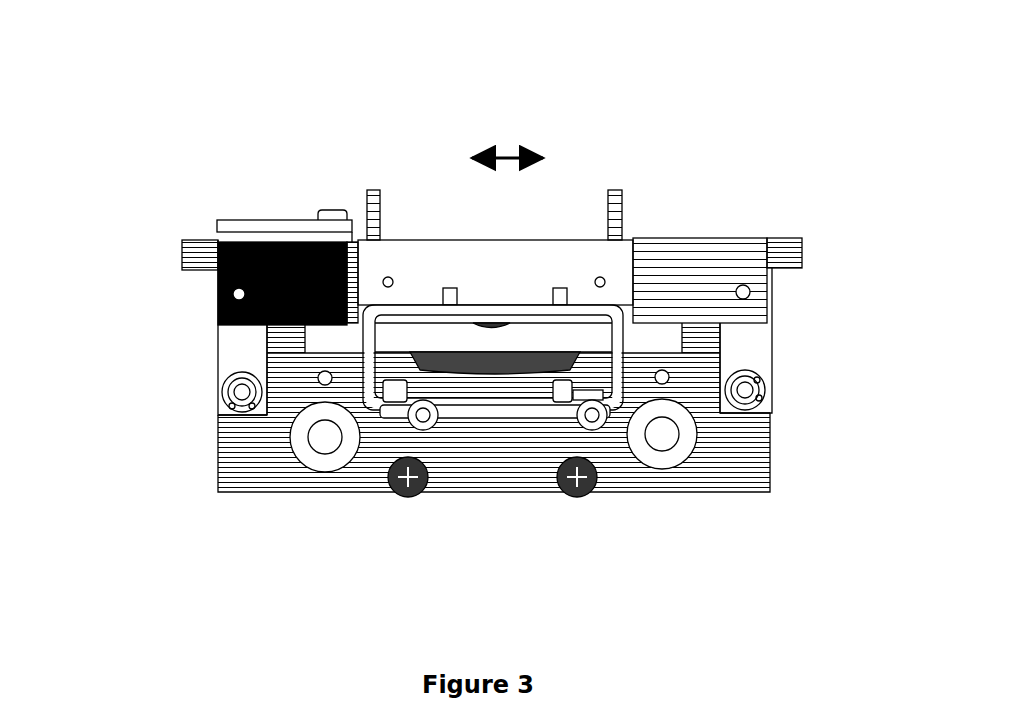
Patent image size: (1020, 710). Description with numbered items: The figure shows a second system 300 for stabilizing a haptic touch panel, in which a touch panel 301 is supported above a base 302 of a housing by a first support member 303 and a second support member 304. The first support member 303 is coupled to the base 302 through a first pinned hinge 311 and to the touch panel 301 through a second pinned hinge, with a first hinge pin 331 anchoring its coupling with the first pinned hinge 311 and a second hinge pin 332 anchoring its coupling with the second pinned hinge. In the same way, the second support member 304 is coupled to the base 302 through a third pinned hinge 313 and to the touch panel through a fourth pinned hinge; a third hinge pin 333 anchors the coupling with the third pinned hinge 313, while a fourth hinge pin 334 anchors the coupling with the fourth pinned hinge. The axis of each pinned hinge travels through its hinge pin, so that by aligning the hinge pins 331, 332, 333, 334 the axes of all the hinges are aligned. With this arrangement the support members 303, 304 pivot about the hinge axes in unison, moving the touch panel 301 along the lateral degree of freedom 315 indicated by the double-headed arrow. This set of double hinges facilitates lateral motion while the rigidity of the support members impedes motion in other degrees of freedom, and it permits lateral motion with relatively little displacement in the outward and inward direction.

The sensor assembly 300 is at (712, 110).
The touch panel 301 is at (422, 216).
The base 302 is at (503, 508).
The first support member 303 is at (196, 344).
The second support member 304 is at (783, 350).
The first pinned hinge 311 is at (242, 432).
The third pinned hinge 313 is at (778, 392).
The lateral degree of freedom 315 is at (507, 141).
The first hinge pin 331 is at (220, 393).
The second hinge pin 332 is at (214, 305).
The third hinge pin 333 is at (745, 409).
The fourth hinge pin 334 is at (766, 300).